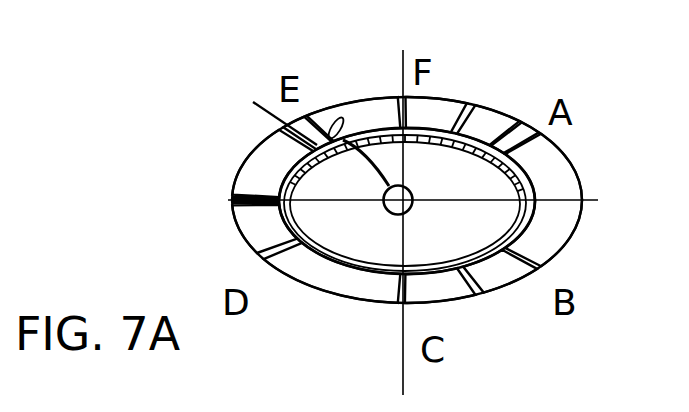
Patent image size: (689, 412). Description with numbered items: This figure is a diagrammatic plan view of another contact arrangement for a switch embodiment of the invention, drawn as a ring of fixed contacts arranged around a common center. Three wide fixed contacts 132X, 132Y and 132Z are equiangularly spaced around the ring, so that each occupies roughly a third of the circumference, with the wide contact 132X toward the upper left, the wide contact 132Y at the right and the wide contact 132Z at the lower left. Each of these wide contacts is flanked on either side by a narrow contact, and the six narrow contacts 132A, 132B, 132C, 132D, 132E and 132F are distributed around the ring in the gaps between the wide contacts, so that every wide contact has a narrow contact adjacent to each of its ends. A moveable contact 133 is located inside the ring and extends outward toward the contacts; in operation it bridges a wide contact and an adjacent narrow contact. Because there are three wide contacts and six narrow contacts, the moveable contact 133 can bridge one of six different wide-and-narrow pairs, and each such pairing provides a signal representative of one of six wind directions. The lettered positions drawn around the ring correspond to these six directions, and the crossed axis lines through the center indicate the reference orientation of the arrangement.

The narrow contact 132A is at (250, 224).
The narrow contact 132B is at (248, 161).
The narrow contact 132C is at (430, 113).
The narrow contact 132D is at (482, 115).
The narrow contact 132E is at (495, 280).
The narrow contact 132F is at (437, 296).
The wide fixed contact 132X is at (358, 93).
The wide fixed contact 132Y is at (560, 165).
The wide fixed contact 132Z is at (322, 280).
The moveable contact 133 is at (249, 109).